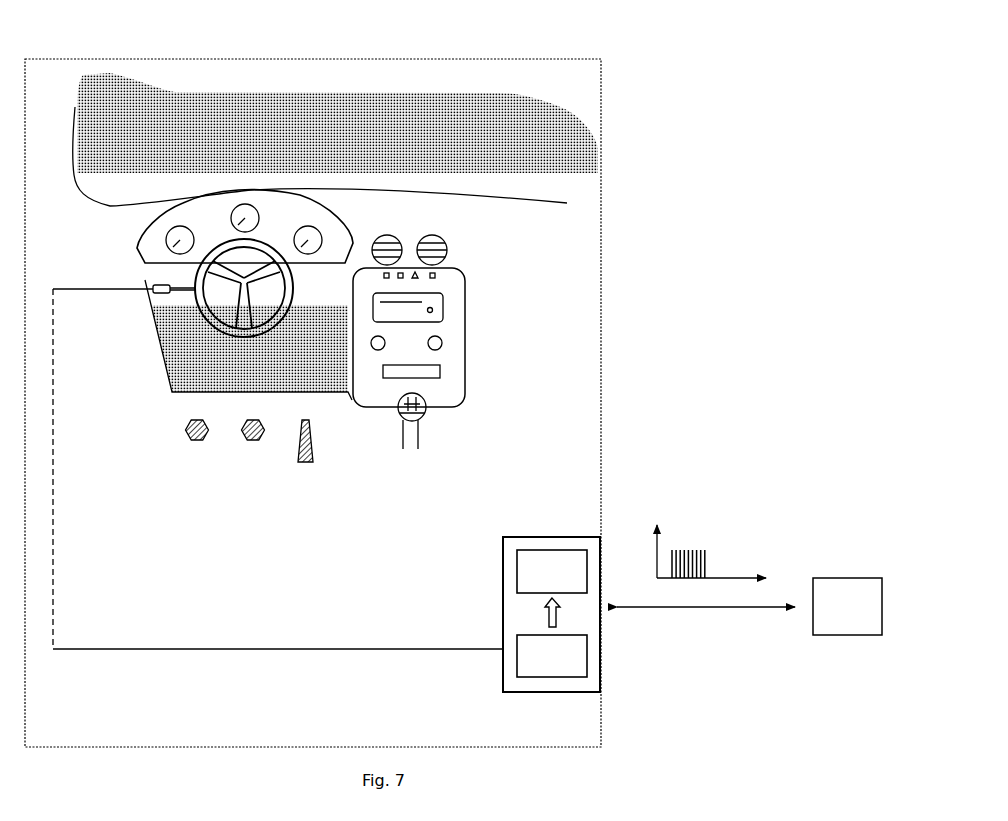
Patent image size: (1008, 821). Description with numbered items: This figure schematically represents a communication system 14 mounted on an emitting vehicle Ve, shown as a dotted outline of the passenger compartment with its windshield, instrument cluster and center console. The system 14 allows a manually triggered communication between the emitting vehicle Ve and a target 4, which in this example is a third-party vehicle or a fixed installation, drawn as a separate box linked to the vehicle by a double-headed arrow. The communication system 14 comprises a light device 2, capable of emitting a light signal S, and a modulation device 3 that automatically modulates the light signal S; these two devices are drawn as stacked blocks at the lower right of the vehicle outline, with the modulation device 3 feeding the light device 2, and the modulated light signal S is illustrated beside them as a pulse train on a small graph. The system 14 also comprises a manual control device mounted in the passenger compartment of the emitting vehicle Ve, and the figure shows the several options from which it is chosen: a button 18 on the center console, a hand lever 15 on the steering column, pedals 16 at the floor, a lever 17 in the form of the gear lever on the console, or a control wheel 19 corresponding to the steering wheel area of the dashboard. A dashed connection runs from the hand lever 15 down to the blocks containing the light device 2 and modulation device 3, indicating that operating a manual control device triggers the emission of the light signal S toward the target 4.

The vehicle Ve is at (340, 56).
The communication system 14 is at (644, 66).
The hand lever 15 is at (160, 300).
The pedals 16 is at (180, 438).
The lever 17 is at (439, 434).
The button 18 is at (439, 350).
The control wheel 19 is at (206, 346).
The light device 2 is at (545, 561).
The modulation device 3 is at (528, 660).
The target 4 is at (855, 576).
The light signal S is at (704, 516).